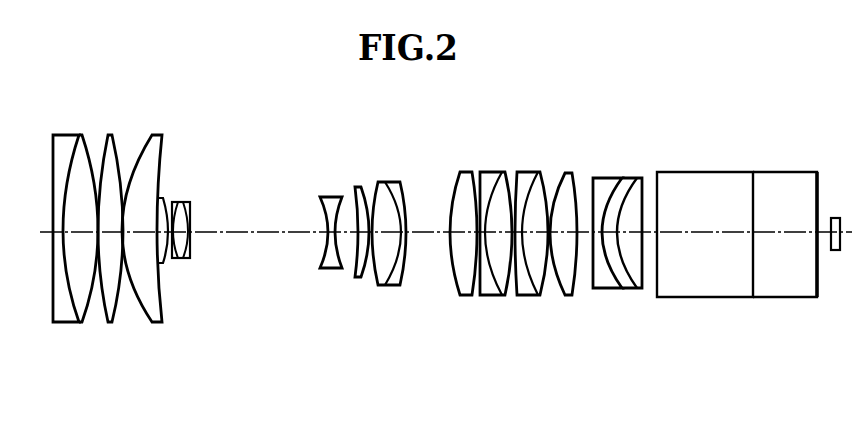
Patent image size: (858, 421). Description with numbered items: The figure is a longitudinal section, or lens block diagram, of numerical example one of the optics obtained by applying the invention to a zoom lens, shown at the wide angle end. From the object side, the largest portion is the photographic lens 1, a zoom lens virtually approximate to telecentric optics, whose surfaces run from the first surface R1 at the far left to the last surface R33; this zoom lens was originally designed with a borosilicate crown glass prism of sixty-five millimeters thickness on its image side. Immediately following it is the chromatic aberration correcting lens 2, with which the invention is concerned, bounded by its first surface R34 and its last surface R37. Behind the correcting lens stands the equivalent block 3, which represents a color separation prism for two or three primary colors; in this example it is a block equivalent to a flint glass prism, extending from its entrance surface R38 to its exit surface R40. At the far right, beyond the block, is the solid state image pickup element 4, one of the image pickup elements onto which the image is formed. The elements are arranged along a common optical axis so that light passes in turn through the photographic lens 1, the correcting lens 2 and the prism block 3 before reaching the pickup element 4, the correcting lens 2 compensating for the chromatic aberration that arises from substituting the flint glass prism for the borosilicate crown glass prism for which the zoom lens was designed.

The photographic lens 1 is at (572, 366).
The chromatic aberration correcting lens 2 is at (648, 369).
The equivalent block 3 is at (815, 369).
The solid state image pickup element 4 is at (835, 252).
The first lens surface R1 is at (53, 136).
The last zoom lens surface R33 is at (574, 173).
The first correcting lens surface R34 is at (594, 178).
The last correcting lens surface R37 is at (642, 178).
The first prism block surface R38 is at (658, 172).
The last prism block surface R40 is at (817, 172).